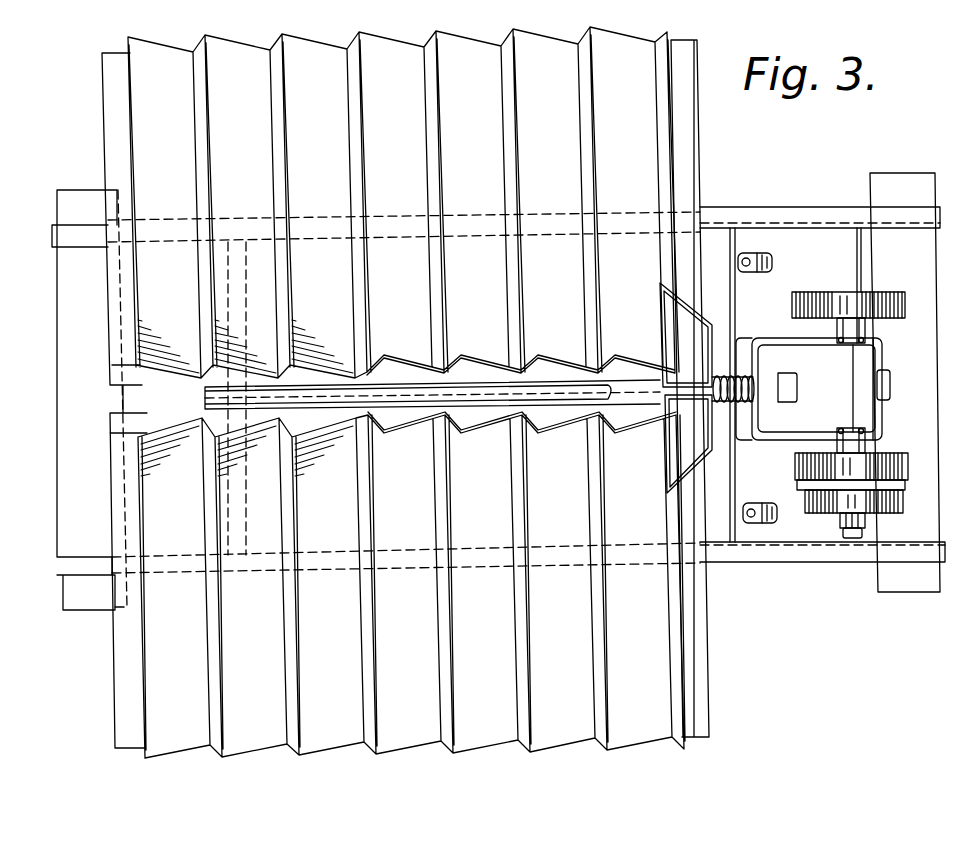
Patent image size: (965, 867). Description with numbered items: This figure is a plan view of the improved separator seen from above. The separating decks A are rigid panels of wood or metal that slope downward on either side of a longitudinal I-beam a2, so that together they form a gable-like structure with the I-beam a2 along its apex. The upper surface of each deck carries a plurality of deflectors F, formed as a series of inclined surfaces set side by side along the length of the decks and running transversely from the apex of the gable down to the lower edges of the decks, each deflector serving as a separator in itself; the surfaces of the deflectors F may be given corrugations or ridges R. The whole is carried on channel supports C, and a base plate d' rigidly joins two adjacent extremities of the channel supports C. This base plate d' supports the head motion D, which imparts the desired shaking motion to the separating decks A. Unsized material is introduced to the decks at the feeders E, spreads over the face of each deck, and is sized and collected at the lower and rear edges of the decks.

The separating decks A is at (390, 220).
The deflectors F is at (447, 639).
The corrugations or ridges R is at (176, 470).
The longitudinal I-beam a2 is at (368, 390).
The channel supports C is at (768, 590).
The base plate d' is at (848, 286).
The head motion D is at (813, 385).
The feeders E is at (686, 388).